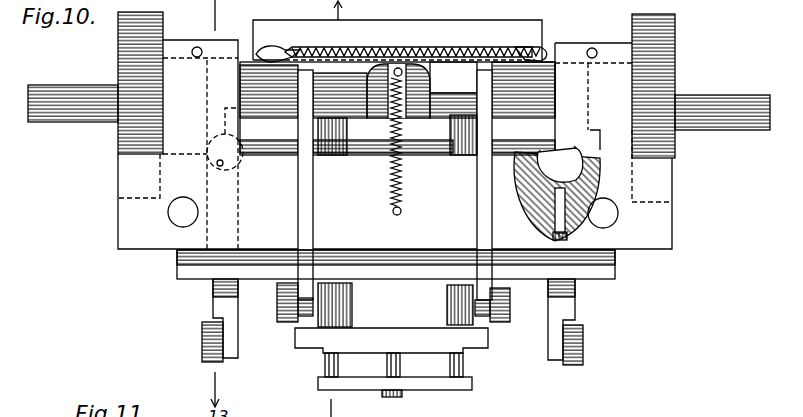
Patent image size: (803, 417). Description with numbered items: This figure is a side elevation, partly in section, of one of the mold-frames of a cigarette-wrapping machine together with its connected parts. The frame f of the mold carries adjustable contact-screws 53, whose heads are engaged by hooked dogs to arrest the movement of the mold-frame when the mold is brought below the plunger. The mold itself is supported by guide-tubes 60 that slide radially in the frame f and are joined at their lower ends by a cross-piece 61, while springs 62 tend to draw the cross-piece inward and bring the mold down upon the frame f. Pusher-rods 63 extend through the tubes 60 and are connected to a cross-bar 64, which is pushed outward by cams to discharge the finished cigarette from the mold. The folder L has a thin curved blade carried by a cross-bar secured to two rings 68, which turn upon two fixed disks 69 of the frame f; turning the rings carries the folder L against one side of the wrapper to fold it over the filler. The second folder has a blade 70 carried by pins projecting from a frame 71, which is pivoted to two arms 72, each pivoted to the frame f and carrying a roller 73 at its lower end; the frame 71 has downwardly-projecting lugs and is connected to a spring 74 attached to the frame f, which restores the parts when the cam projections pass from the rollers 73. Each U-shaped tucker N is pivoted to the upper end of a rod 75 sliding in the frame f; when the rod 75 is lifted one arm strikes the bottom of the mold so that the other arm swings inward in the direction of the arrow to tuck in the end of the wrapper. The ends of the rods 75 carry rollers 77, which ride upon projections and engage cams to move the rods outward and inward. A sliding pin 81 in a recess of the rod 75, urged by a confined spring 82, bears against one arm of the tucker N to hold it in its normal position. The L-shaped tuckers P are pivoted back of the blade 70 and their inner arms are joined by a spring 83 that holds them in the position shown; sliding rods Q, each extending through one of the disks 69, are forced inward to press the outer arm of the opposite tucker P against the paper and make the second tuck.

The contact-screw 53 is at (400, 67).
The guide-tube 60 is at (320, 133).
The cross-piece 61 is at (391, 340).
The spring 62 is at (352, 303).
The pusher-rod 63 is at (470, 370).
The cross-bar 64 is at (424, 388).
The ring 68 is at (118, 62).
The fixed disk 69 is at (598, 132).
The blade 70 is at (346, 50).
The frame 71 is at (453, 77).
The arm 72 is at (300, 199).
The roller 73 is at (283, 318).
The spring 74 is at (393, 186).
The rod 75 is at (213, 297).
The roller 77 is at (202, 347).
The sliding pin 81 is at (592, 192).
The spring 82 is at (580, 232).
The spring 83 is at (410, 50).
The tucker P is at (265, 50).
The tucker N is at (582, 124).
The folder L is at (522, 126).
The sliding rod Q is at (80, 120).
The frame f is at (130, 220).